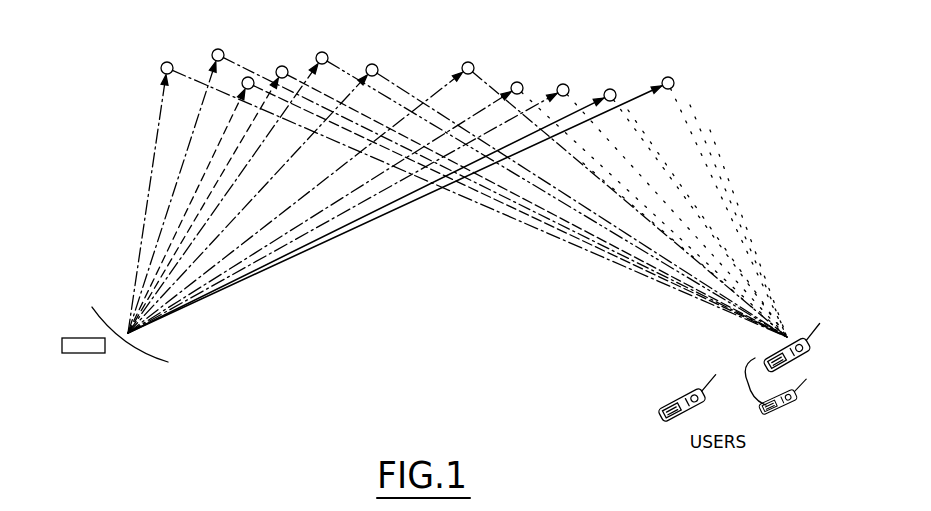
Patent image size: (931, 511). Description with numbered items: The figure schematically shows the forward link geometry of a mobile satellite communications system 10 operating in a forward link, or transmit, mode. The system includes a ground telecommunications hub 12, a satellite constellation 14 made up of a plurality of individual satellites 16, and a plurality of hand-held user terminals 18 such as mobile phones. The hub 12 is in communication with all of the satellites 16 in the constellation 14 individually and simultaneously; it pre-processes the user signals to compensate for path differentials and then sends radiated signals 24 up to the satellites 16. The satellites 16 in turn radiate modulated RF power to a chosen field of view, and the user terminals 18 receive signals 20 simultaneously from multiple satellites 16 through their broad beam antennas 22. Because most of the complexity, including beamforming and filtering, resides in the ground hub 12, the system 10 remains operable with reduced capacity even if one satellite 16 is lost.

The mobile satellite communications system 10 is at (344, 40).
The ground telecommunications hub 12 is at (72, 335).
The satellite constellation 14 is at (594, 75).
The individual satellites 16 is at (477, 63).
The hand-held user terminals 18 is at (693, 381).
The signals 20 is at (677, 215).
The broad beam antennas 22 is at (823, 335).
The radiated signals 24 is at (182, 222).